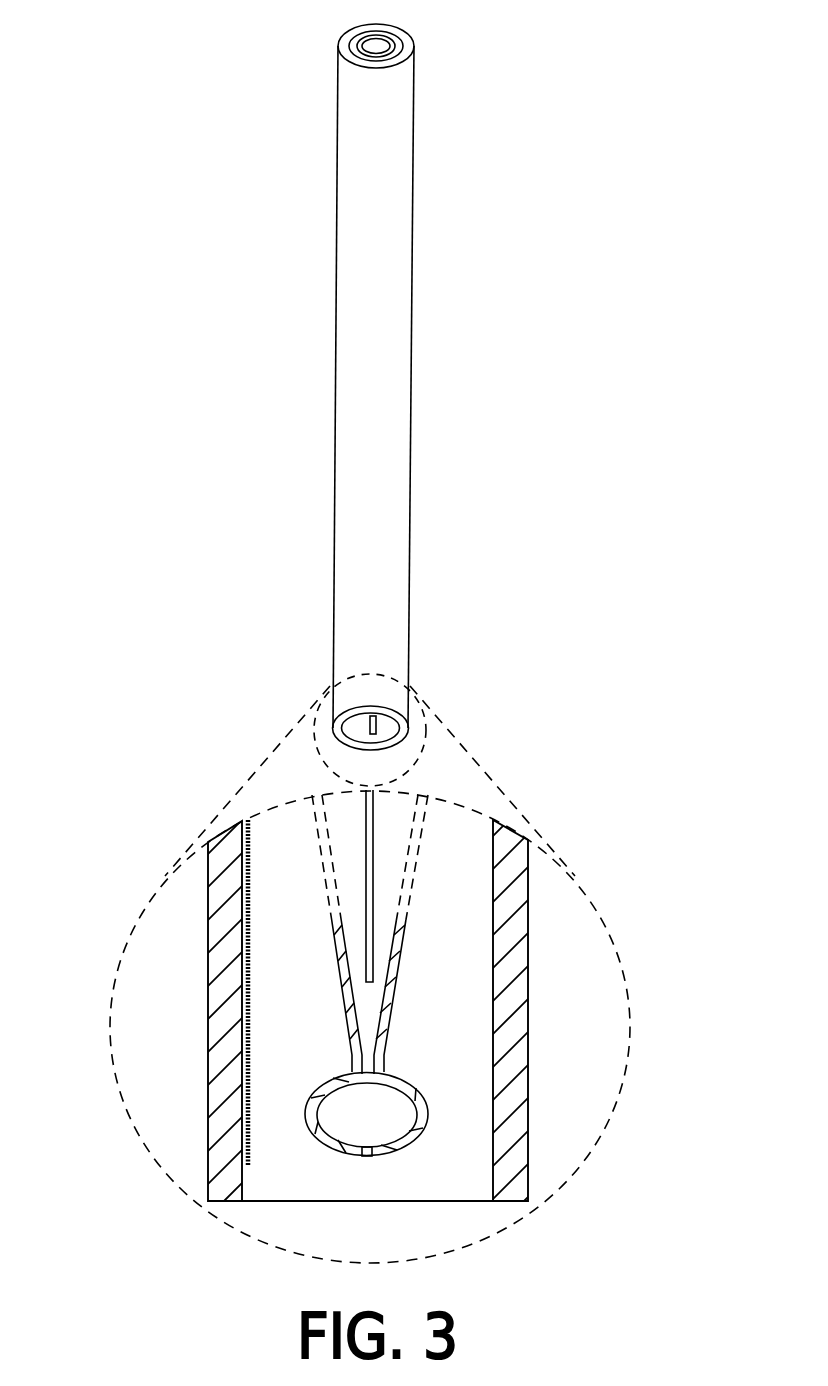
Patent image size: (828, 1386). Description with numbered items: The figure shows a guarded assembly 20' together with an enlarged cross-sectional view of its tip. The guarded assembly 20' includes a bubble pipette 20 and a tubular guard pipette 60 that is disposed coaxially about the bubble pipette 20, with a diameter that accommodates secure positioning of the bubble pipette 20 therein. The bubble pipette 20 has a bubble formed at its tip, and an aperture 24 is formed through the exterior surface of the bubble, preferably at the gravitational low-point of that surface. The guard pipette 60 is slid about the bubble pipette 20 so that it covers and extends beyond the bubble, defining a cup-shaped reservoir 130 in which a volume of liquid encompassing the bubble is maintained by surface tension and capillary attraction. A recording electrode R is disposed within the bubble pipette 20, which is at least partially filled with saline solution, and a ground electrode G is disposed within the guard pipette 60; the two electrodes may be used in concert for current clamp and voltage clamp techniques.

The guarded assembly 20' is at (571, 660).
The guard pipette 60 is at (410, 401).
The bubble pipette 20 is at (437, 895).
The aperture 24 is at (368, 1156).
The cup-shaped reservoir 130 is at (470, 1072).
The recording electrode R is at (376, 855).
The ground electrode G is at (252, 948).